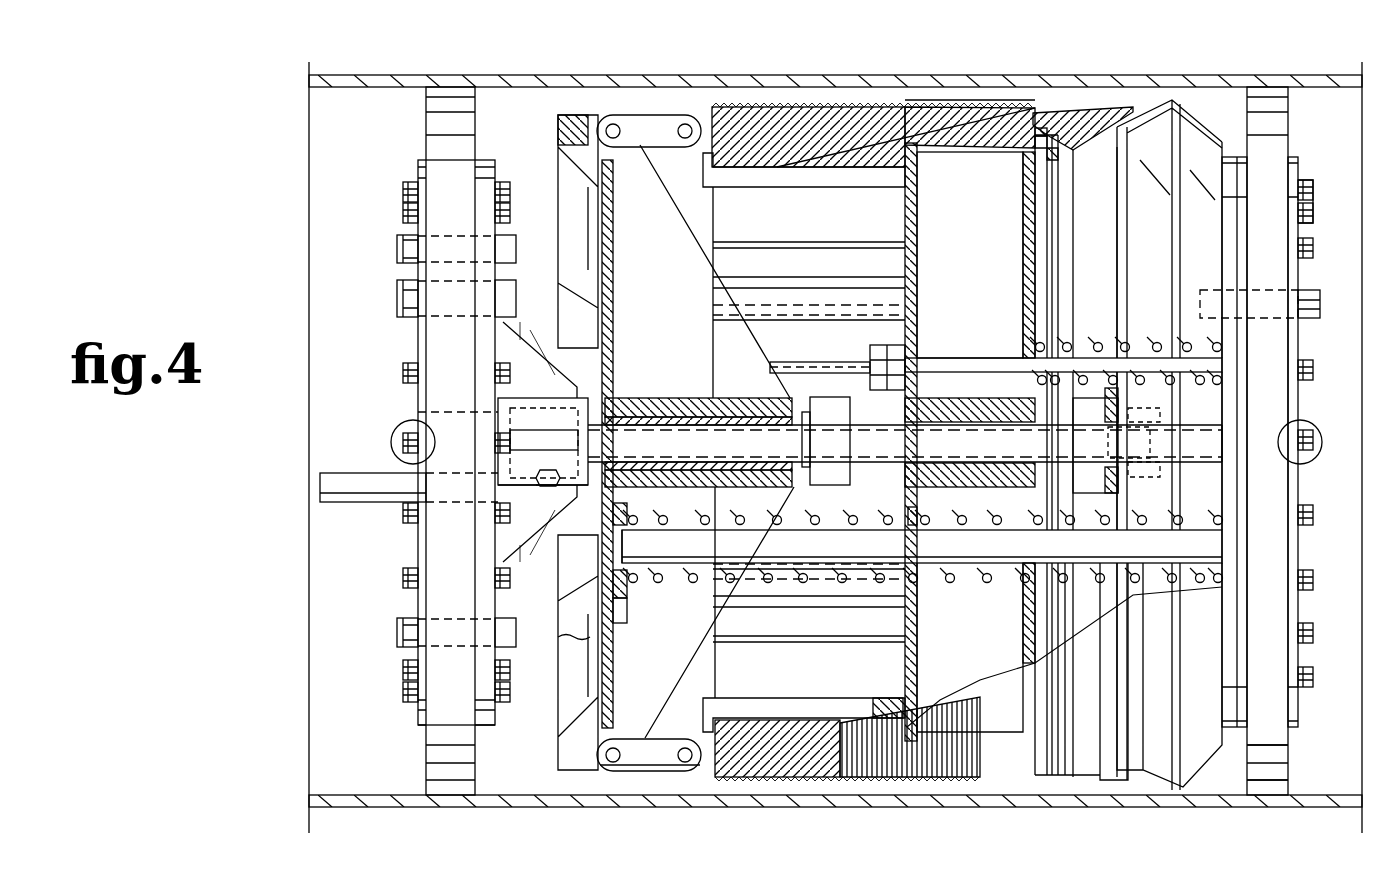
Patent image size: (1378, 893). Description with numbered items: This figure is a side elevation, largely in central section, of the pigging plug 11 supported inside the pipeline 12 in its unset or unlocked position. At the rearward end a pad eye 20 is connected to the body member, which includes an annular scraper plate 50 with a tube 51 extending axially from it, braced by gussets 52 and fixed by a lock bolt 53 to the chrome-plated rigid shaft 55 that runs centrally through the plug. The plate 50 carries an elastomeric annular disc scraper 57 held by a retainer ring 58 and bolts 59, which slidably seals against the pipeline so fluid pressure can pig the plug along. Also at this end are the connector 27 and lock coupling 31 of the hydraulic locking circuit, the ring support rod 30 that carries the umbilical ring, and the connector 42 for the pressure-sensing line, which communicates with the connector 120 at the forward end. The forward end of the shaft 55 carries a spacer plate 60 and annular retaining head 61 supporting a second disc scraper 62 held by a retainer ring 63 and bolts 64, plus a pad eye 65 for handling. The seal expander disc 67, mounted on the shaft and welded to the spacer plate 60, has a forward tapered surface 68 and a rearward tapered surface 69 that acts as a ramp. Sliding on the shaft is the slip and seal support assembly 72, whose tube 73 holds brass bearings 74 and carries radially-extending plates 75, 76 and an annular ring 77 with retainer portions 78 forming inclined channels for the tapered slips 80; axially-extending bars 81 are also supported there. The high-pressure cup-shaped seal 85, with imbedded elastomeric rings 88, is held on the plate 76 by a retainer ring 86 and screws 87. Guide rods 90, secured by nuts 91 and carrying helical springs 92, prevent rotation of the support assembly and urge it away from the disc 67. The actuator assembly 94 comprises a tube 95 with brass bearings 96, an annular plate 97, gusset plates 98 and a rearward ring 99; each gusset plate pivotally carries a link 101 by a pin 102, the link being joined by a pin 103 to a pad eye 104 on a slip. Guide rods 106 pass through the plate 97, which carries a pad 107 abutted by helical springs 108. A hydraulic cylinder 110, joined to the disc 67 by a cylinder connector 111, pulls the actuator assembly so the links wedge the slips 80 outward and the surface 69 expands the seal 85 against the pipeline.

The pigging plug 11 is at (1012, 100).
The pipeline 12 is at (1185, 75).
The pad eye 20 is at (398, 425).
The connector 27 is at (397, 248).
The ring support rod 30 is at (372, 473).
The lock coupling 31 is at (397, 630).
The connector 42 is at (397, 290).
The annular scraper plate 50 is at (495, 712).
The tube 51 is at (578, 485).
The gussets 52 is at (520, 330).
The lock bolt 53 is at (548, 486).
The rigid shaft 55 is at (905, 443).
The annular disc scraper 57 is at (440, 755).
The retainer ring 58 is at (418, 712).
The bolts 59 is at (410, 320).
The spacer plate 60 is at (1232, 600).
The annular retaining head 61 is at (1248, 627).
The disc scraper 62 is at (1288, 765).
The retainer ring 63 is at (1313, 645).
The bolts 64 is at (1313, 215).
The pad eye 65 is at (1316, 425).
The seal expander disc 67 is at (1195, 755).
The tapered surface 68 is at (1195, 118).
The tapered surface 69 is at (1145, 113).
The slip and seal support assembly 72 is at (1005, 780).
The tube 73 is at (985, 398).
The brass bearings 74 is at (950, 487).
The radially-extending plate 75 is at (917, 247).
The radially-extending plate 76 is at (1023, 278).
The annular ring 77 is at (1008, 100).
The retainer portions 78 is at (905, 107).
The slip 80 is at (805, 107).
The axially-extending bars 81 is at (812, 187).
The high-pressure cup-shaped seal 85 is at (1080, 113).
The retainer ring 86 is at (1055, 160).
The screws 87 is at (1047, 138).
The elastomeric rings 88 is at (1112, 107).
The guide rods 90 is at (1183, 372).
The nuts 91 is at (870, 350).
The helical spring 92 is at (1095, 347).
The actuator assembly 94 is at (620, 775).
The tube 95 is at (688, 398).
The brass bearings 96 is at (640, 417).
The annular plate 97 is at (613, 302).
The gusset plates 98 is at (676, 442).
The rearward ring 99 is at (558, 118).
The link 101 is at (648, 118).
The pin 102 is at (613, 123).
The pin 103 is at (685, 123).
The pad eye 104 is at (715, 107).
The guide rods 106 is at (922, 546).
The pad 107 is at (627, 610).
The helical springs 108 is at (950, 578).
The hydraulic cylinders 110 is at (870, 470).
The cylinder connectors 111 is at (1160, 470).
The connector 120 is at (1320, 292).